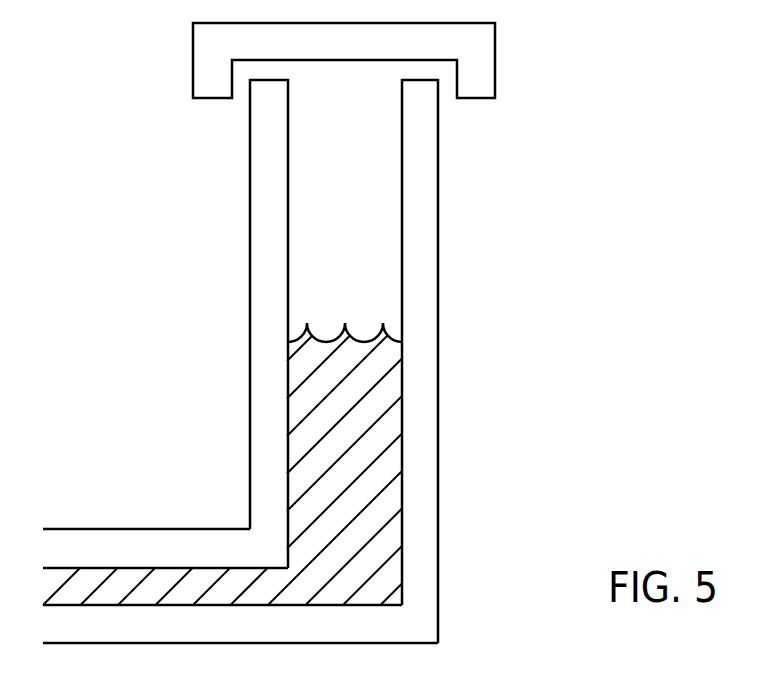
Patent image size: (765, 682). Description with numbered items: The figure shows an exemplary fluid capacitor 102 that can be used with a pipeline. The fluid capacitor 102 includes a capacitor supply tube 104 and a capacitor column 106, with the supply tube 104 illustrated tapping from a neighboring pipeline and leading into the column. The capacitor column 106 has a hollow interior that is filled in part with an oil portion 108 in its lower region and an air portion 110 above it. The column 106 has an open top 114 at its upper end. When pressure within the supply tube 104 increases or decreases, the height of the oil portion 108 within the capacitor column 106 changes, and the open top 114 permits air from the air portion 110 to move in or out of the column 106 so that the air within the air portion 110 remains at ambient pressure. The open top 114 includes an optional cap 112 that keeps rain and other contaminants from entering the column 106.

The fluid capacitor 102 is at (128, 342).
The capacitor supply tube 104 is at (82, 550).
The capacitor column 106 is at (248, 262).
The oil portion 108 is at (362, 385).
The air portion 110 is at (362, 248).
The cap 112 is at (210, 51).
The open top 114 is at (353, 79).